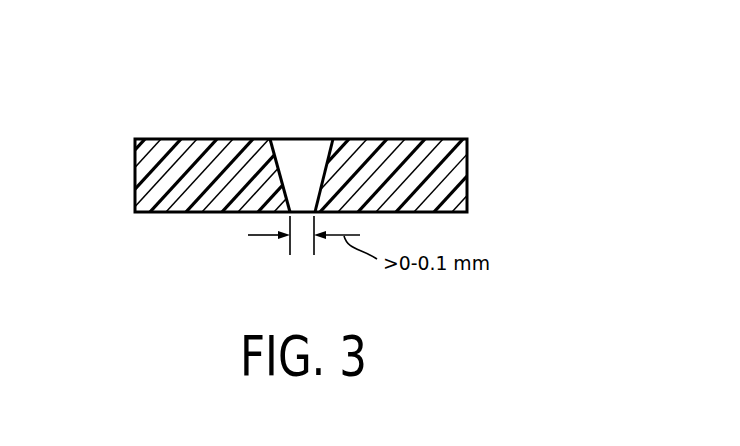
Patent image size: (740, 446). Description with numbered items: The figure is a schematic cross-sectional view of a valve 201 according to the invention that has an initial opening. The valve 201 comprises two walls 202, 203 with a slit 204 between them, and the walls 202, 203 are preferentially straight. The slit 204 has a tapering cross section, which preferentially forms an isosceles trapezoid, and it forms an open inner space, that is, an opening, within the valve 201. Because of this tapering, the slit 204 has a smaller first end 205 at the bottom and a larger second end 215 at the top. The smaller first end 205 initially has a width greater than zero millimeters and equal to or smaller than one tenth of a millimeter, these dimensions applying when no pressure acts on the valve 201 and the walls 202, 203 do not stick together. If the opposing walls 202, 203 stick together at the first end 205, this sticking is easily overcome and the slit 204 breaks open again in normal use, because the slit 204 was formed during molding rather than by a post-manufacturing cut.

The valve 201 is at (527, 70).
The wall 202 is at (135, 171).
The wall 203 is at (467, 174).
The slit 204 is at (284, 156).
The smaller first end 205 is at (299, 237).
The larger second end 215 is at (308, 116).